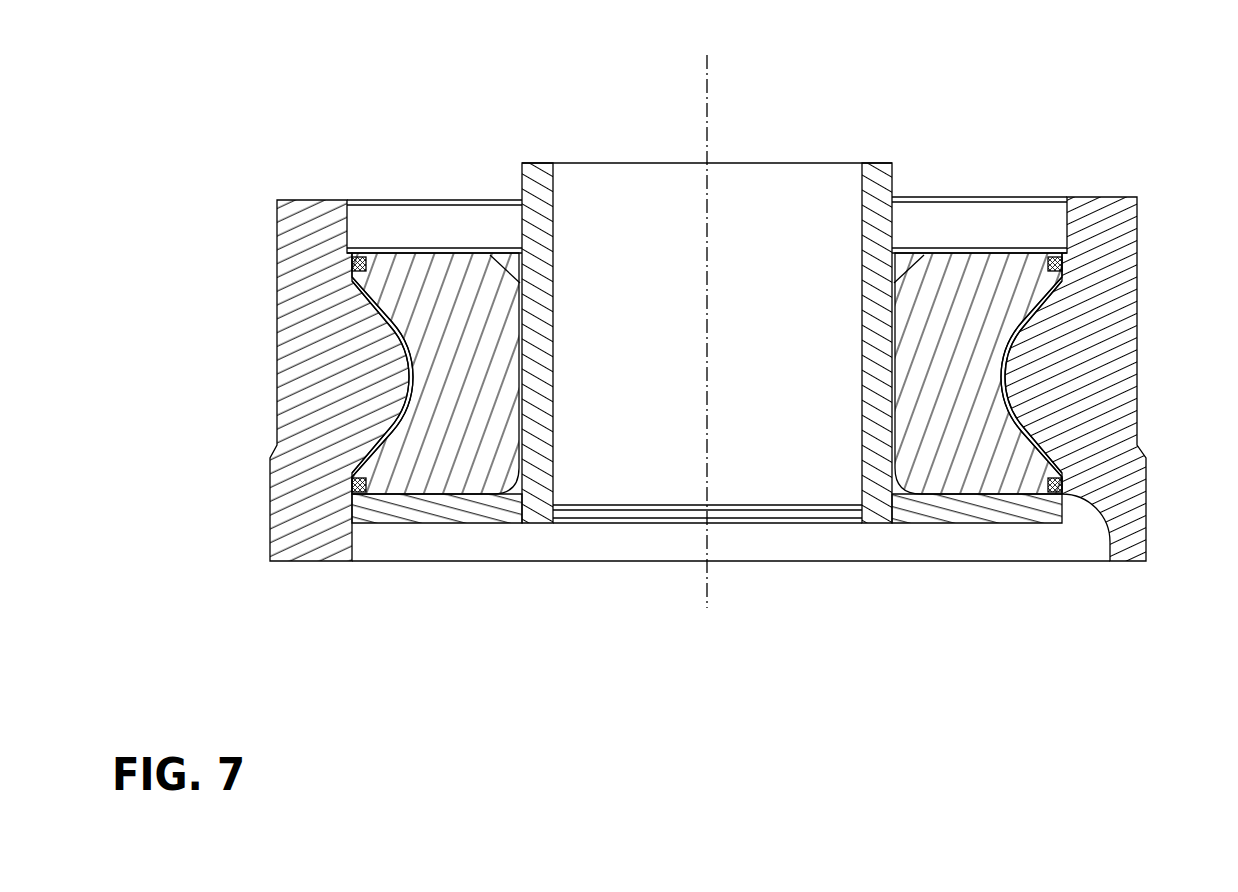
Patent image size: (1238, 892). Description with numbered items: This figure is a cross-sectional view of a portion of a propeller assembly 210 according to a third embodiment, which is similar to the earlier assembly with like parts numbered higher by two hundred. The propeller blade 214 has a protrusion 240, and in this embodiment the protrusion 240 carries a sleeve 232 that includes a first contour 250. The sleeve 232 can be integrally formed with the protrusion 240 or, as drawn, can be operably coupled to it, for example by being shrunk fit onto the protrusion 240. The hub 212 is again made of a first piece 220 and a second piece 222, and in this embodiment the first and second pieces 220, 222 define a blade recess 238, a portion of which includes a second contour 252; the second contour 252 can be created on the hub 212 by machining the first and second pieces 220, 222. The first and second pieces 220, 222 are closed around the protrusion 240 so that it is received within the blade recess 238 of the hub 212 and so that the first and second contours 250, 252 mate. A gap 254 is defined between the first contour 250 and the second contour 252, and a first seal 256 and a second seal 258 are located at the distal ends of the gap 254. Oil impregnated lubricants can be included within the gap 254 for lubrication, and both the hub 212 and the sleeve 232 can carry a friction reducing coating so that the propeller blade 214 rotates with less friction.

The propeller assembly 210 is at (446, 140).
The hub 212 is at (1142, 256).
The propeller blade 214 is at (896, 184).
The first piece 220 is at (277, 422).
The second piece 222 is at (1103, 350).
The sleeve 232 is at (450, 478).
The blade recess 238 is at (1052, 492).
The protrusion 240 is at (985, 505).
The first contour 250 is at (1003, 372).
The second contour 252 is at (950, 500).
The gap 254 is at (407, 363).
The first seal 256 is at (352, 266).
The second seal 258 is at (352, 488).